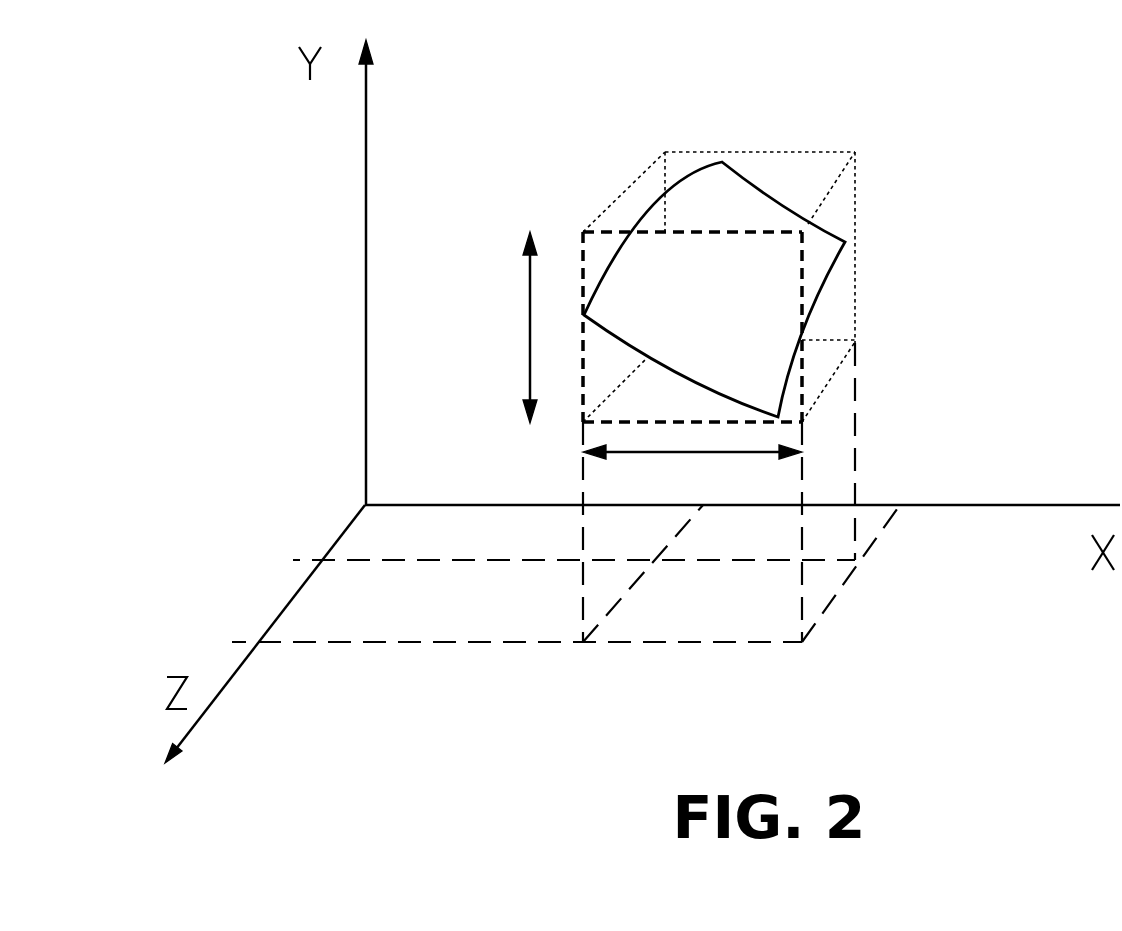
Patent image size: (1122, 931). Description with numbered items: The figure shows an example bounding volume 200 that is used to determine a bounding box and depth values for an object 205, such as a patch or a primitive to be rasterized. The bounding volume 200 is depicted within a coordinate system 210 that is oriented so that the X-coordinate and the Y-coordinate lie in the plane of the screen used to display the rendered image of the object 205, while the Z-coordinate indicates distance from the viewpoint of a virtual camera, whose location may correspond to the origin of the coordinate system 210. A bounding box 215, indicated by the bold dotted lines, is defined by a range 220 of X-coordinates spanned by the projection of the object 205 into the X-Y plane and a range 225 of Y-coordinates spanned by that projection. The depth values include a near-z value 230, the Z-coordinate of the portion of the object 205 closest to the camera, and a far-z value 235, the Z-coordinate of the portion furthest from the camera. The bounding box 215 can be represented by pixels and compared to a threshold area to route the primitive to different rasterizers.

The bounding volume 200 is at (855, 223).
The object 205 is at (757, 187).
The coordinate system 210 is at (366, 177).
The bounding box 215 is at (625, 228).
The range of X-coordinates 220 is at (693, 453).
The range of Y-coordinates 225 is at (530, 342).
The near-z value 230 is at (308, 558).
The far-z value 235 is at (242, 640).